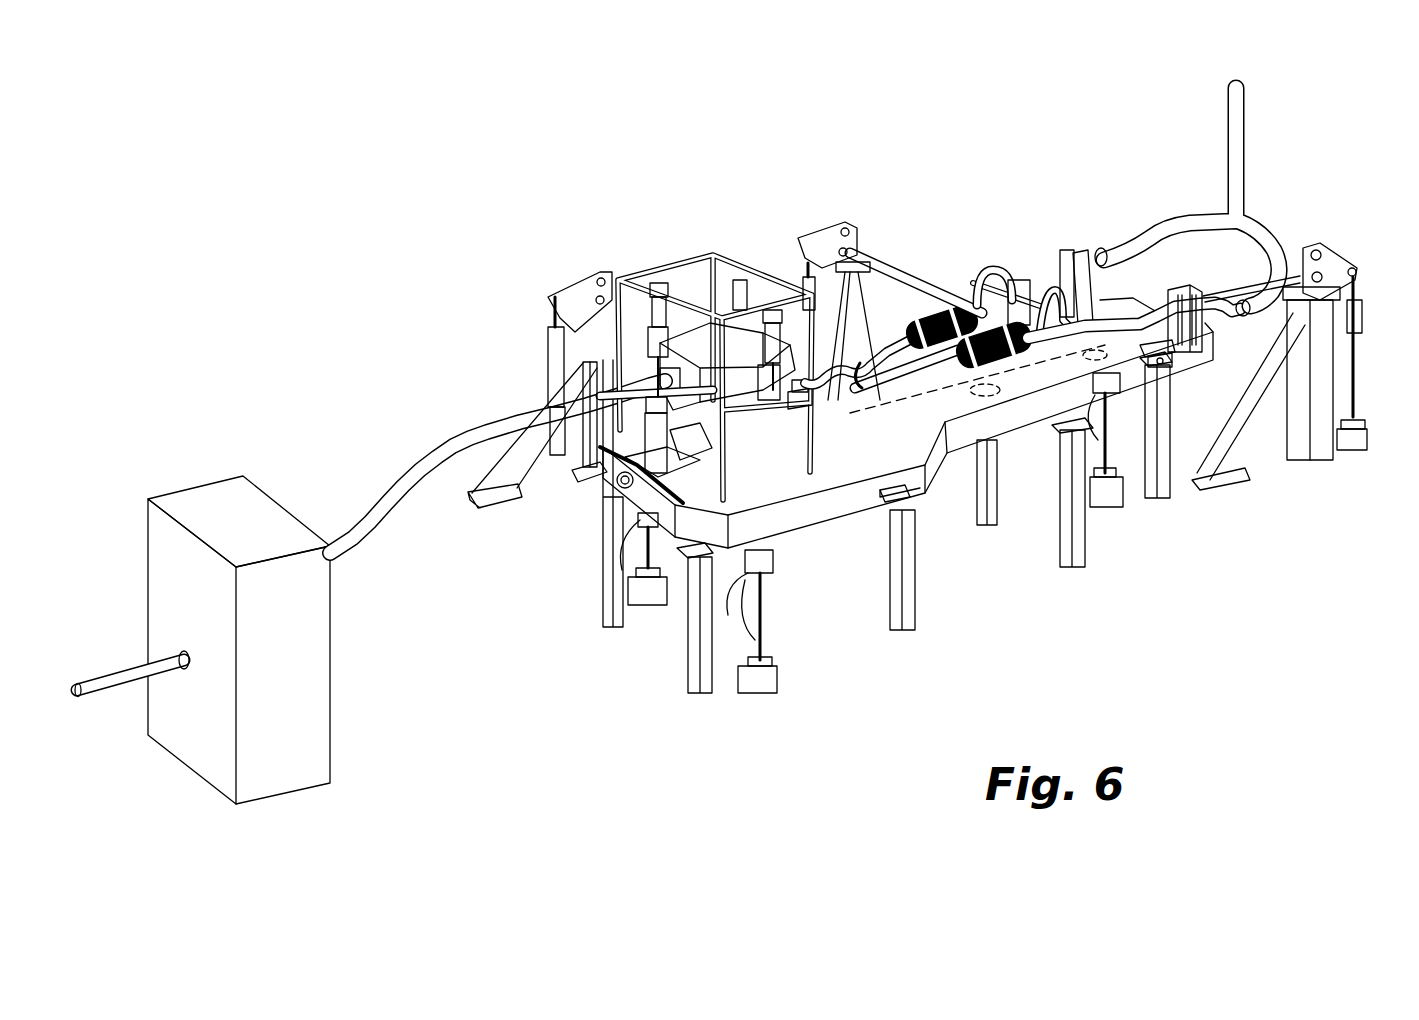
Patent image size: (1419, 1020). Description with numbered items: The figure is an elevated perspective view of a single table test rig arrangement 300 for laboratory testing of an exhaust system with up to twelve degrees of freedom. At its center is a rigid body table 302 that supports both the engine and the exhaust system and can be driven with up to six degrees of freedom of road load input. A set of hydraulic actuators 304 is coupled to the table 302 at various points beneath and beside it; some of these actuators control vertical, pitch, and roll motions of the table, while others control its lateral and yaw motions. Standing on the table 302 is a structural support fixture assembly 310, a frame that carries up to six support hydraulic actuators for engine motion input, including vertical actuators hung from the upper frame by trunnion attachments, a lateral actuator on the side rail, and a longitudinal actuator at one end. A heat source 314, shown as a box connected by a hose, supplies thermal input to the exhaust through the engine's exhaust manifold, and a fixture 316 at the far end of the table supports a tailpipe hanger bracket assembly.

The single table test rig arrangement 300 is at (305, 215).
The rigid body table 302 is at (797, 532).
The hydraulic actuators 304 is at (1337, 257).
The structural support fixture assembly 310 is at (702, 257).
The heat source 314 is at (200, 484).
The fixture 316 is at (1199, 297).